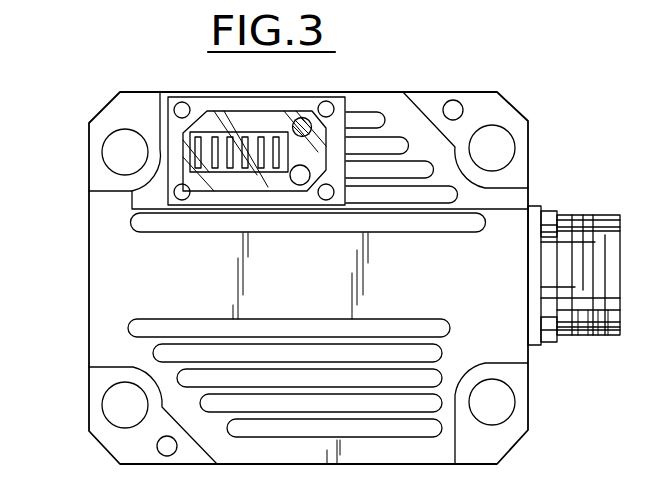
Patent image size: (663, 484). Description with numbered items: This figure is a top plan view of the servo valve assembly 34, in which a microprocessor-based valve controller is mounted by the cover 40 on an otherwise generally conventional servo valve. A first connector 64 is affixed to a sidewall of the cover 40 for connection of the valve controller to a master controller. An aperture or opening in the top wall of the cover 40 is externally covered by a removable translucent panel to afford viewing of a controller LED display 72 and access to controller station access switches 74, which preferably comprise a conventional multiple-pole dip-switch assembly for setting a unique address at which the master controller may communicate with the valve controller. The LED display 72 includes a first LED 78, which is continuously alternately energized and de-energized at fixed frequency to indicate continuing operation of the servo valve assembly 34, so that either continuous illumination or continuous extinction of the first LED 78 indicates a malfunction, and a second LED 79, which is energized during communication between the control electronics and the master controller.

The servo valve assembly 34 is at (80, 342).
The cover 40 is at (433, 97).
The first connector 64 is at (577, 222).
The controller LED display 72 is at (310, 119).
The controller station access switches 74 is at (242, 131).
The first LED 78 is at (300, 186).
The second LED 79 is at (301, 110).